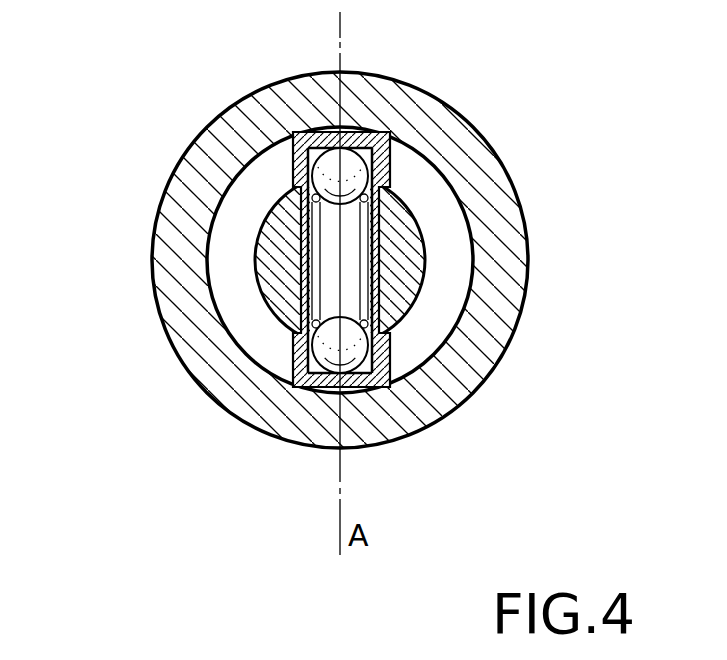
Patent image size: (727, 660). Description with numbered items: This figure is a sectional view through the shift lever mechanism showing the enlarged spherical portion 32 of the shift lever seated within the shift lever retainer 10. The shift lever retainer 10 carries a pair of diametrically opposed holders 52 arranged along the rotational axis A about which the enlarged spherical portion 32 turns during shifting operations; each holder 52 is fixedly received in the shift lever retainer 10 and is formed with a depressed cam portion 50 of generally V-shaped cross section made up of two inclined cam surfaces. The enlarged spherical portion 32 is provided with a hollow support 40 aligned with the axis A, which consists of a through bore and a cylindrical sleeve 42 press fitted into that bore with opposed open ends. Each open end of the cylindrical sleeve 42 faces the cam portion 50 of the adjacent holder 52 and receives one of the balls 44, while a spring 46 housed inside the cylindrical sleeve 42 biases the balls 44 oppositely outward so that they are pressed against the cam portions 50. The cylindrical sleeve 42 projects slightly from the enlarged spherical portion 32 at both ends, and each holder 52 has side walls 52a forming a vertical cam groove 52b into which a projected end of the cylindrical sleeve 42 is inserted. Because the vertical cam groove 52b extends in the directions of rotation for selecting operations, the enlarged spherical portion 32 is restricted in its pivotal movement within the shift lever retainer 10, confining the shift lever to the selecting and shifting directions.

The shift lever retainer 10 is at (477, 148).
The enlarged spherical portion 32 is at (280, 235).
The hollow support 40 is at (397, 245).
The cylindrical sleeve 42 is at (310, 268).
The balls 44 is at (342, 147).
The spring 46 is at (392, 163).
The cam portion 50 is at (291, 150).
The holder 52 is at (362, 131).
The side walls 52a is at (393, 137).
The vertical cam groove 52b is at (390, 133).